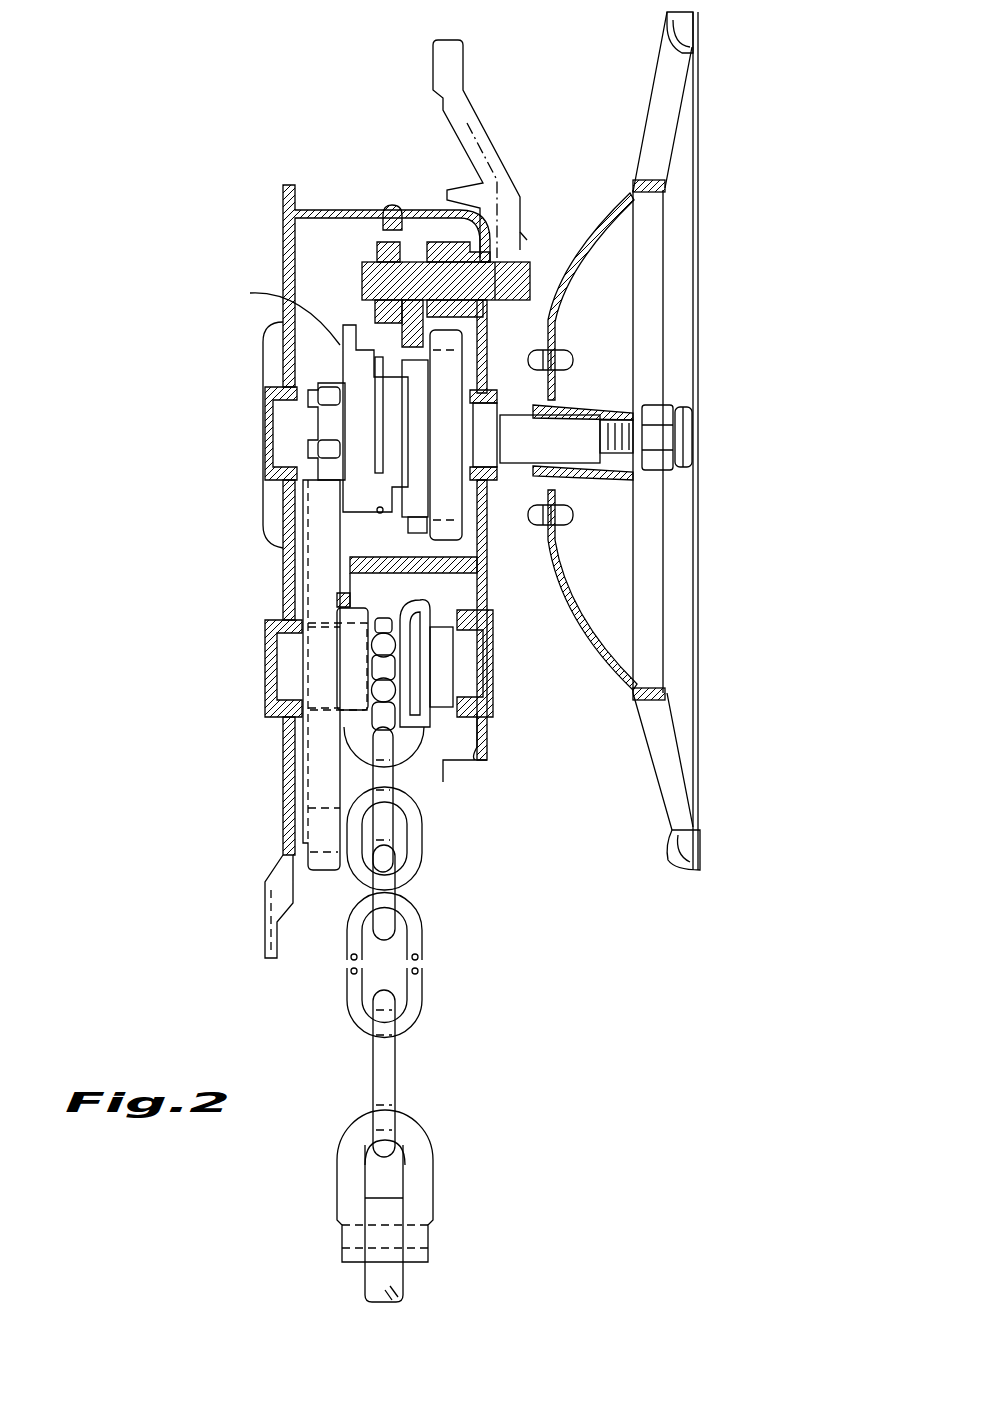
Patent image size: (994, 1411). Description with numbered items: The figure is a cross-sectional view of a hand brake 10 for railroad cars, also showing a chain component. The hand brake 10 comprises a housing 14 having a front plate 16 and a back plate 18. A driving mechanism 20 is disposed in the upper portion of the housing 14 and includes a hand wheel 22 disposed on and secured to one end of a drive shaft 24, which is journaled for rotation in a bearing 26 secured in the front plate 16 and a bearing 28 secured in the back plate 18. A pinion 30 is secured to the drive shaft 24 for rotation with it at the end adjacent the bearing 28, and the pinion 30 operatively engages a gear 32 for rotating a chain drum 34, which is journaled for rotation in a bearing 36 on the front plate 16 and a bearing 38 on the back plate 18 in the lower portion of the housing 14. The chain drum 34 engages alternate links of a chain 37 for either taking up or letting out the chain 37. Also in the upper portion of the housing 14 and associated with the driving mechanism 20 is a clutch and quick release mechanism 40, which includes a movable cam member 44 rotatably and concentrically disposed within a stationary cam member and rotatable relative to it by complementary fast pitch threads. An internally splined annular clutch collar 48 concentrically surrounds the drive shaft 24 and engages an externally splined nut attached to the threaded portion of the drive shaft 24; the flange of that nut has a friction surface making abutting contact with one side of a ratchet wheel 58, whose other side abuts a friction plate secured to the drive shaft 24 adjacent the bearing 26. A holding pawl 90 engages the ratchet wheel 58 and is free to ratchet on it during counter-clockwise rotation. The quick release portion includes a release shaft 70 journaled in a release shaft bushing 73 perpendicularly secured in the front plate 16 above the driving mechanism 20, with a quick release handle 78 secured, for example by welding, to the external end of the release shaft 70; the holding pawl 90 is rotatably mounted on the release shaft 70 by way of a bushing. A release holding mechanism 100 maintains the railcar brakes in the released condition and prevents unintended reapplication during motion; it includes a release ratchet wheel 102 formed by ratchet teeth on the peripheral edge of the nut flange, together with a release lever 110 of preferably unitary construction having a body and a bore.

The hand brake 10 is at (235, 137).
The housing 14 is at (303, 145).
The front plate 16 is at (485, 527).
The back plate 18 is at (290, 582).
The driving mechanism 20 is at (720, 243).
The hand wheel 22 is at (660, 115).
The drive shaft 24 is at (585, 427).
The bearing 26 is at (540, 516).
The bearing 28 is at (290, 470).
The pinion 30 is at (310, 453).
The gear 32 is at (317, 793).
The chain drum 34 is at (427, 722).
The bearing 36 is at (480, 694).
The chain 37 is at (413, 988).
The bearing 38 is at (282, 698).
The clutch and quick release mechanism 40 is at (238, 328).
The movable cam member 44 is at (287, 378).
The clutch collar 48 is at (320, 330).
The ratchet wheel 58 is at (450, 378).
The release shaft 70 is at (490, 285).
The release shaft bushing 73 is at (505, 257).
The quick release handle 78 is at (467, 123).
The holding pawl 90 is at (432, 242).
The release holding mechanism 100 is at (527, 230).
The release ratchet wheel 102 is at (375, 335).
The release lever 110 is at (372, 238).